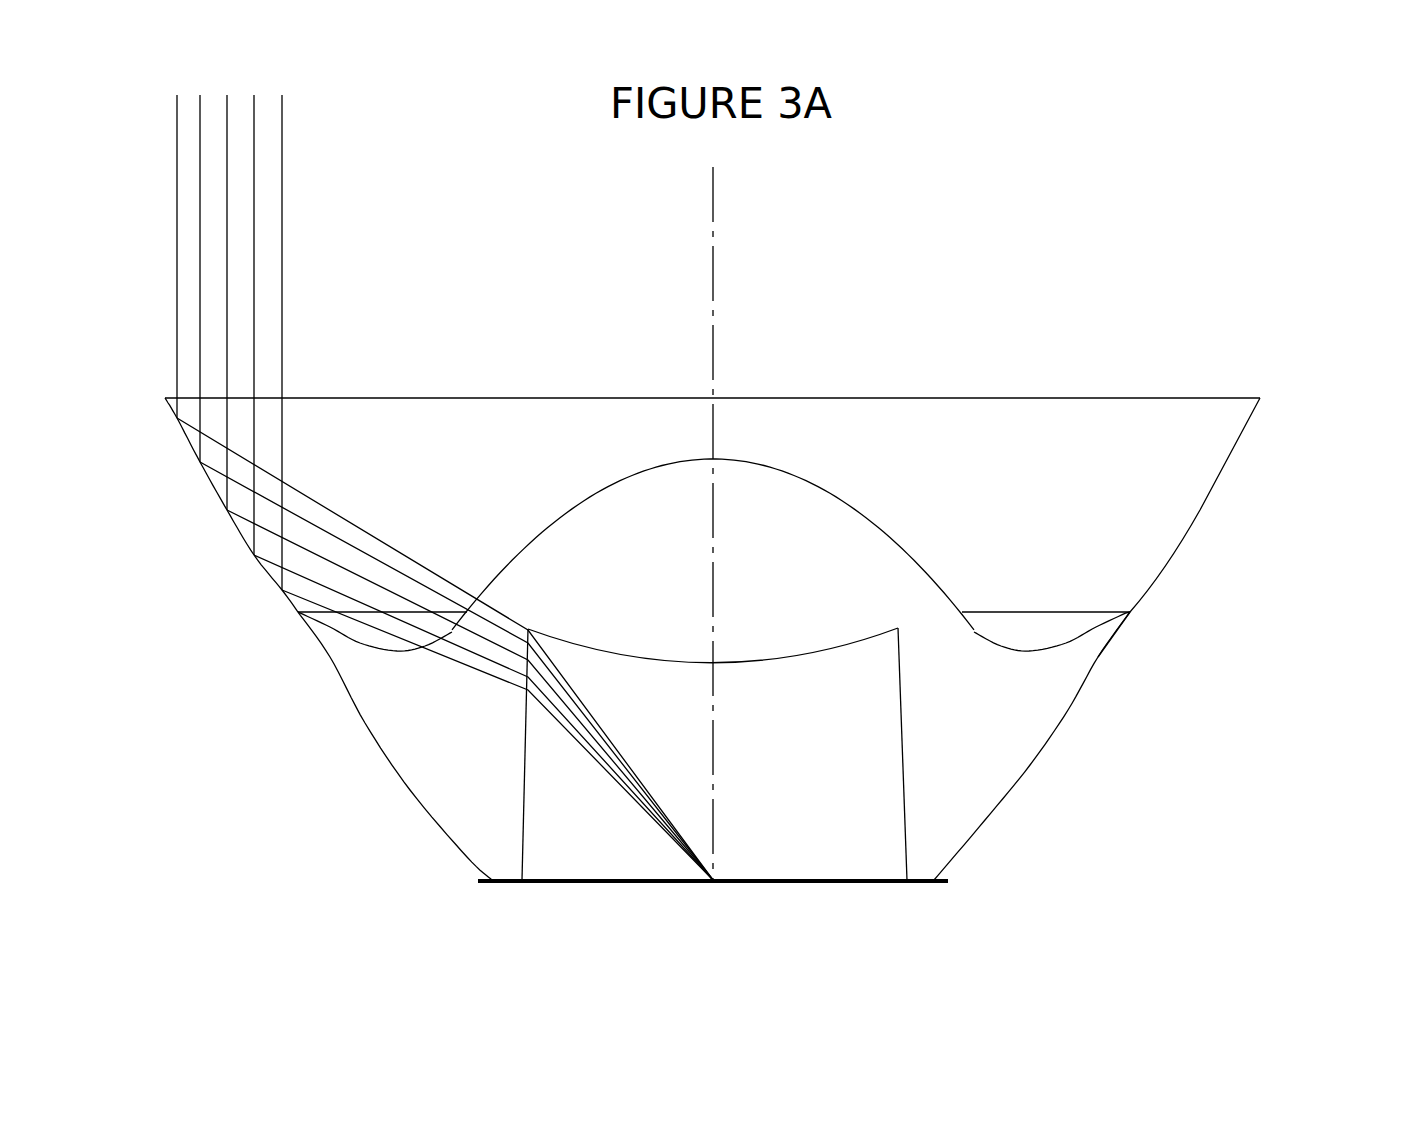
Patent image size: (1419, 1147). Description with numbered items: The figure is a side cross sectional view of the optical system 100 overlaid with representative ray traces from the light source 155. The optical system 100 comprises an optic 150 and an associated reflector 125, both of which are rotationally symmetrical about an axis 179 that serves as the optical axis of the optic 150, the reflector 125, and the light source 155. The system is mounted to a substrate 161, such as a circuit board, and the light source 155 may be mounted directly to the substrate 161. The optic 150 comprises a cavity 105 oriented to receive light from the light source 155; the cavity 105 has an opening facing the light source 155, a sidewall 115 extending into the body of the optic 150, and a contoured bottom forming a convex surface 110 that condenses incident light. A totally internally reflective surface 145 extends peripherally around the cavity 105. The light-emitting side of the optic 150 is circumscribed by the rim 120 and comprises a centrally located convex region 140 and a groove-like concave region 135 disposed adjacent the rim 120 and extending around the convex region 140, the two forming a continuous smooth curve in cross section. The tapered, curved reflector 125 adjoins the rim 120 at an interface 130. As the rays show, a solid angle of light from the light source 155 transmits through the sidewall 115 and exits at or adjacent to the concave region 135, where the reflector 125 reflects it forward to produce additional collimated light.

The optical system 100 is at (1245, 156).
The cavity 105 is at (790, 895).
The convex surface 110 is at (748, 662).
The sidewall 115 is at (878, 740).
The rim 120 is at (1145, 645).
The reflector 125 is at (1252, 482).
The interface 130 is at (1158, 612).
The concave region 135 is at (1026, 612).
The convex region 140 is at (767, 428).
The totally internally reflective surface 145 is at (340, 762).
The optic 150 is at (1108, 733).
The light source 155 is at (700, 900).
The substrate 161 is at (942, 885).
The axis 179 is at (713, 192).